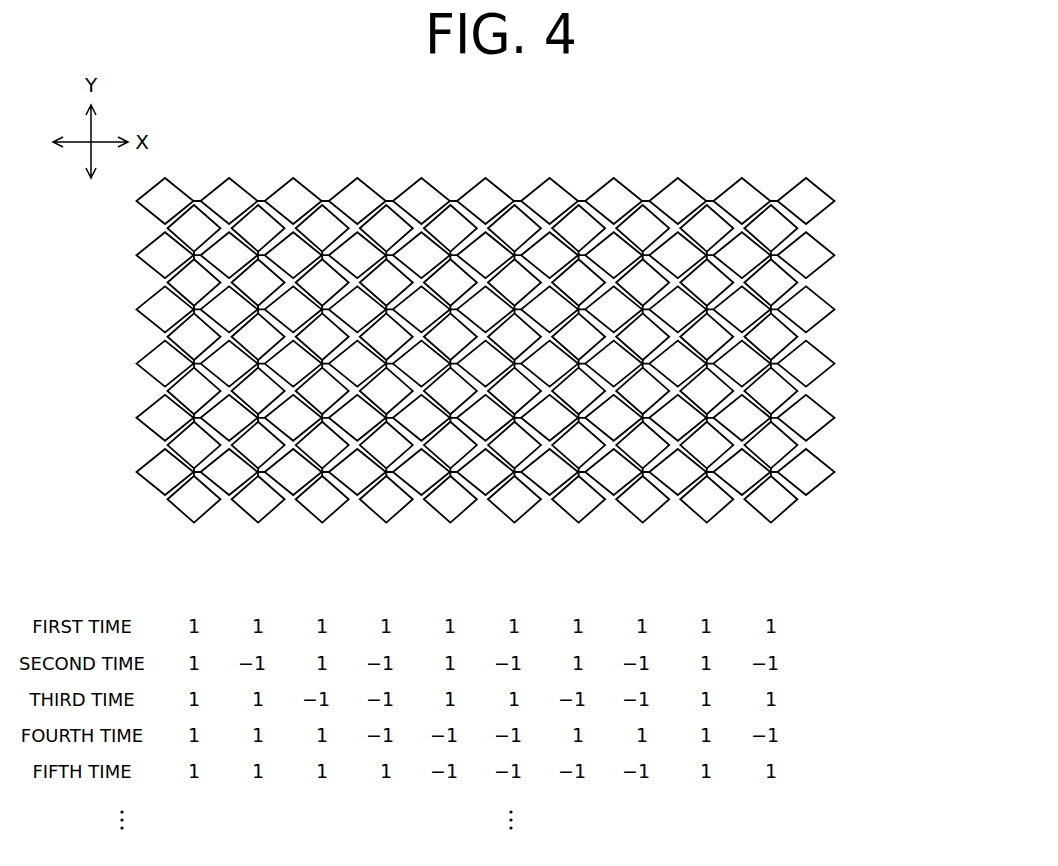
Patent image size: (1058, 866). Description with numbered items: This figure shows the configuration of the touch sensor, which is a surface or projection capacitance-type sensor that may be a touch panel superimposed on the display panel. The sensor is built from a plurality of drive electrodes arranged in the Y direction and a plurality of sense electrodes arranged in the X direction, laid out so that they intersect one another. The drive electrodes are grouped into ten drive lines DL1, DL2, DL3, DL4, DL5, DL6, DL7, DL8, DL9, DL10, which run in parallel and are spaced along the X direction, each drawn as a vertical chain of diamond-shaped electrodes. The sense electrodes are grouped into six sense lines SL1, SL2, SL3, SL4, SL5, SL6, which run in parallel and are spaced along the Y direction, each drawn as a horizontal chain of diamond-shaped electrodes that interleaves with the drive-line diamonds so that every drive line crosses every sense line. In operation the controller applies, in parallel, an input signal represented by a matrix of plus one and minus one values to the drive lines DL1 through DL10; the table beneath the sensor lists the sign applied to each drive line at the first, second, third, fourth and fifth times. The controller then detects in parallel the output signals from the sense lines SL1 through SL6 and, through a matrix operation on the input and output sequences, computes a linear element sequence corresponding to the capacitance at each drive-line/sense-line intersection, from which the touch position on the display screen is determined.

The sense line SL1 is at (834, 201).
The sense line SL2 is at (834, 255).
The sense line SL3 is at (834, 309).
The sense line SL4 is at (834, 364).
The sense line SL5 is at (834, 418).
The sense line SL6 is at (834, 472).
The drive line DL1 is at (194, 523).
The drive line DL2 is at (258, 523).
The drive line DL3 is at (322, 523).
The drive line DL4 is at (386, 523).
The drive line DL5 is at (450, 523).
The drive line DL6 is at (514, 523).
The drive line DL7 is at (579, 523).
The drive line DL8 is at (643, 523).
The drive line DL9 is at (707, 523).
The drive line DL10 is at (771, 523).